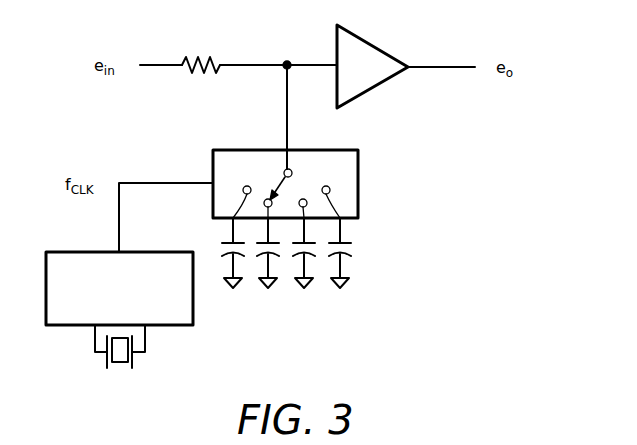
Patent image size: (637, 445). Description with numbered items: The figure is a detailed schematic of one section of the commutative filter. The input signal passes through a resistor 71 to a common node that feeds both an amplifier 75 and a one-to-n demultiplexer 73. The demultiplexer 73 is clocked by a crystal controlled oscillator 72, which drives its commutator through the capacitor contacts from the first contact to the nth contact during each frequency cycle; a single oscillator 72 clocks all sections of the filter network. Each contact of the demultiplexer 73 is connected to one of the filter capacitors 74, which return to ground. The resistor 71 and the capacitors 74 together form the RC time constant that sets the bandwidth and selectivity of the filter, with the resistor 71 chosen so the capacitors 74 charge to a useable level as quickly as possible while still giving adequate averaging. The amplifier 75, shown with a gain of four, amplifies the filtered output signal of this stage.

The resistor 71 is at (201, 58).
The crystal controlled oscillator 72 is at (135, 252).
The 1 to n demultiplexer 73 is at (335, 150).
The capacitor 74 is at (358, 259).
The amplifier 75 is at (374, 46).